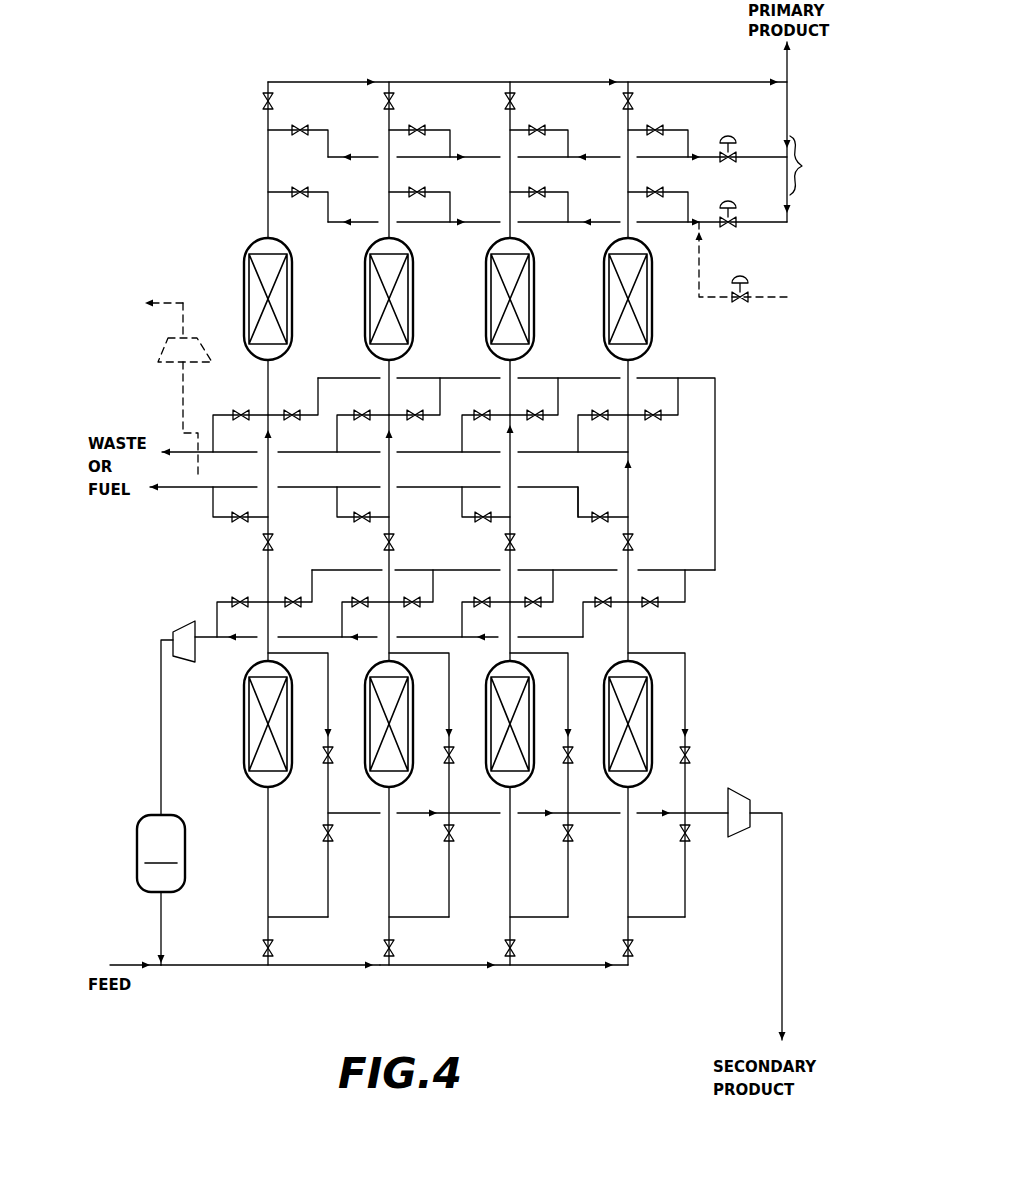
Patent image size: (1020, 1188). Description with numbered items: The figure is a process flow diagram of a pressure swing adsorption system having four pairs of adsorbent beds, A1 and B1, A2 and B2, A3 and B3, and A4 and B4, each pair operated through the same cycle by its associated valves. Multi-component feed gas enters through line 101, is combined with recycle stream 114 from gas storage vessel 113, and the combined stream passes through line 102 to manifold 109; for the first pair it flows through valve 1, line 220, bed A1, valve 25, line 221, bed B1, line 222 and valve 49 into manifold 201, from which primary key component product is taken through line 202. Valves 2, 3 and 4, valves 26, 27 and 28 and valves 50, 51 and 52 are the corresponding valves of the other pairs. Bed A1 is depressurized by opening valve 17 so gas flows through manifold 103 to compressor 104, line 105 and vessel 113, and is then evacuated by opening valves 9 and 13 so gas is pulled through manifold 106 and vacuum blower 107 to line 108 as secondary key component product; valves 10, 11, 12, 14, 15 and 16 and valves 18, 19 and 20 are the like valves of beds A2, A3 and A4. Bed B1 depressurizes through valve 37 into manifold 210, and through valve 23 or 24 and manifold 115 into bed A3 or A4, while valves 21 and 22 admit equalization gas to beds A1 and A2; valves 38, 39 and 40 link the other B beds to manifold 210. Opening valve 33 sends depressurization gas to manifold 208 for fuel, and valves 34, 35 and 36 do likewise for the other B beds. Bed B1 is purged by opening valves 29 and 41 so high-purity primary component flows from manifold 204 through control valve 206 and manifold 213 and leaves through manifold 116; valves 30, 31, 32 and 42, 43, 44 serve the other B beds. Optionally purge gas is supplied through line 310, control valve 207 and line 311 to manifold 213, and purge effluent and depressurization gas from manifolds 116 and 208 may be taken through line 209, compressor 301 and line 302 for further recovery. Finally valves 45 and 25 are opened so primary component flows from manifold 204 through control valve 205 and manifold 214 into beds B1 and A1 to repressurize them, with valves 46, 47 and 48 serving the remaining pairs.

The valve 1 is at (273, 953).
The feed valve A2 2 is at (393, 953).
The valve 3 is at (514, 953).
The valve 4 is at (633, 953).
The valve 9 is at (320, 835).
The bypass valve 10 is at (441, 835).
The valve 11 is at (559, 835).
The valve 12 is at (677, 835).
The valve 13 is at (332, 763).
The bypass valve 14 is at (453, 763).
The valve 15 is at (572, 763).
The valve 16 is at (689, 763).
The valve 17 is at (240, 608).
The valve 18 is at (360, 608).
The valve 19 is at (482, 608).
The valve 20 is at (603, 608).
The valve 21 is at (293, 608).
The valve 22 is at (412, 608).
The valve 23 is at (533, 608).
The valve 24 is at (650, 608).
The valve 25 is at (273, 544).
The valve 26 is at (393, 544).
The valve 27 is at (514, 544).
The valve 28 is at (632, 544).
The valve 29 is at (238, 523).
The valve 30 is at (356, 523).
The valve 31 is at (480, 523).
The valve 32 is at (596, 523).
The valve 33 is at (243, 422).
The valve 34 is at (360, 422).
The valve 35 is at (482, 422).
The valve 36 is at (600, 422).
The valve 37 is at (294, 422).
The valve 38 is at (416, 422).
The valve 39 is at (537, 422).
The valve 40 is at (654, 422).
The valve 41 is at (298, 197).
The valve 42 is at (427, 192).
The valve 43 is at (547, 192).
The valve 44 is at (666, 192).
The valve 45 is at (302, 135).
The valve 46 is at (414, 128).
The valve 47 is at (534, 128).
The valve 48 is at (654, 128).
The valve 49 is at (261, 106).
The valve 50 is at (382, 106).
The valve 51 is at (502, 106).
The valve 52 is at (620, 102).
The feed line 101 is at (146, 959).
The line 102 is at (228, 962).
The manifold 103 is at (480, 640).
The compressor 104 is at (184, 620).
The line 105 is at (160, 745).
The manifold 106 is at (486, 817).
The vacuum blower 107 is at (738, 794).
The line 108 is at (784, 828).
The manifold 109 is at (442, 968).
The gas storage vessel 113 is at (161, 853).
The recycle stream 114 is at (158, 926).
The manifold 115 is at (493, 570).
The manifold 116 is at (448, 489).
The manifold 201 is at (490, 82).
The line 202 is at (790, 76).
The manifold 204 is at (813, 165).
The control valve 205 is at (736, 145).
The control valve 206 is at (736, 209).
The control valve 207 is at (740, 304).
The manifold 208 is at (405, 454).
The line 209 is at (182, 424).
The manifold 210 is at (492, 378).
The manifold 213 is at (490, 226).
The manifold 214 is at (488, 158).
The line 220 is at (265, 856).
The line 221 is at (270, 502).
The line 222 is at (264, 174).
The compressor 301 is at (166, 338).
The line 302 is at (196, 293).
The line 310 is at (750, 295).
The line 311 is at (702, 258).
The bed A1 is at (242, 721).
The bed A2 is at (368, 720).
The bed A3 is at (488, 720).
The bed A4 is at (606, 720).
The bed B1 is at (244, 288).
The bed B2 is at (365, 288).
The bed B3 is at (486, 288).
The bed B4 is at (604, 288).